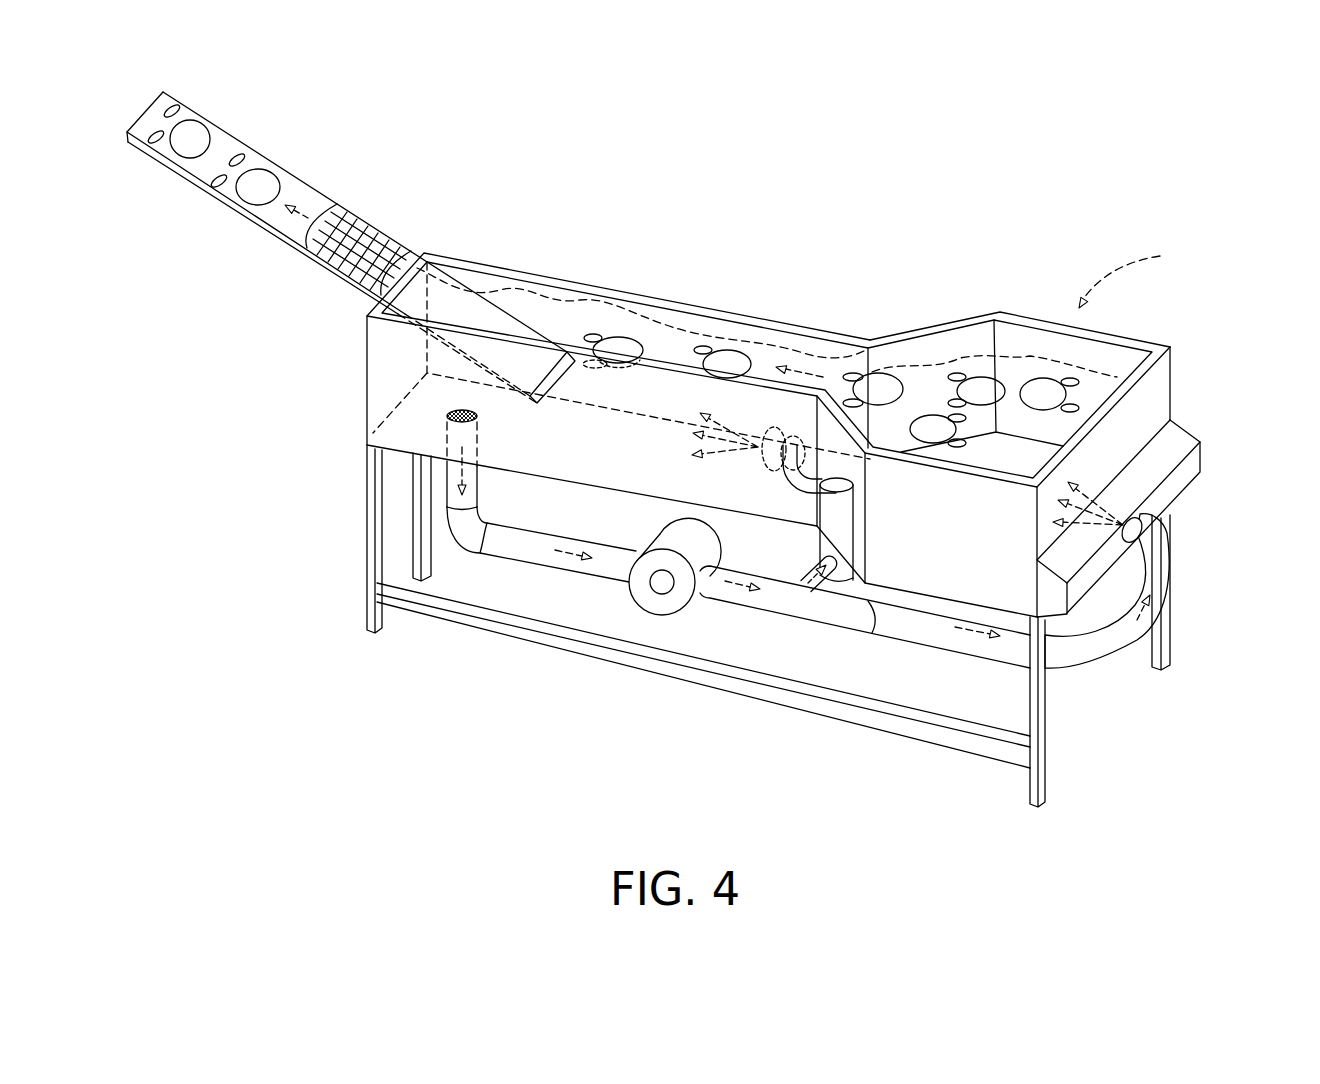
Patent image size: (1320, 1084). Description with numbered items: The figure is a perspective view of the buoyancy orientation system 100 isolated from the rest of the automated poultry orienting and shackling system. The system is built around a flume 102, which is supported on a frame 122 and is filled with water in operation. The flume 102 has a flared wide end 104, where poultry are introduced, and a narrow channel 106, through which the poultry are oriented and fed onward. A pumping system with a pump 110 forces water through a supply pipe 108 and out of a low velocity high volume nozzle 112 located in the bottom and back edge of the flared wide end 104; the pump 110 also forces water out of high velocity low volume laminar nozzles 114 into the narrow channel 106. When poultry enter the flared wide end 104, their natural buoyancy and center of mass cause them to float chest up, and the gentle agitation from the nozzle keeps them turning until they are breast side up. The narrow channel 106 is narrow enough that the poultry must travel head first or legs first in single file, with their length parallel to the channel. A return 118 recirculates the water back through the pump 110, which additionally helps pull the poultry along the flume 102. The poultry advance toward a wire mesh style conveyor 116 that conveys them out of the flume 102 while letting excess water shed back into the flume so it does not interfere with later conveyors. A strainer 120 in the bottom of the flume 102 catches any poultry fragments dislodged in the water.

The buoyancy orientation system 100 is at (760, 249).
The flume 102 is at (870, 338).
The flared wide end 104 is at (1120, 340).
The narrow channel 106 is at (612, 285).
The supply pipe 108 is at (828, 603).
The pump 110 is at (645, 595).
The low velocity high volume nozzle 112 is at (1142, 515).
The high velocity low volume laminar nozzles 114 is at (758, 470).
The wire mesh style conveyor 116 is at (348, 214).
The return 118 is at (478, 482).
The strainer 120 is at (460, 410).
The frame 122 is at (768, 626).